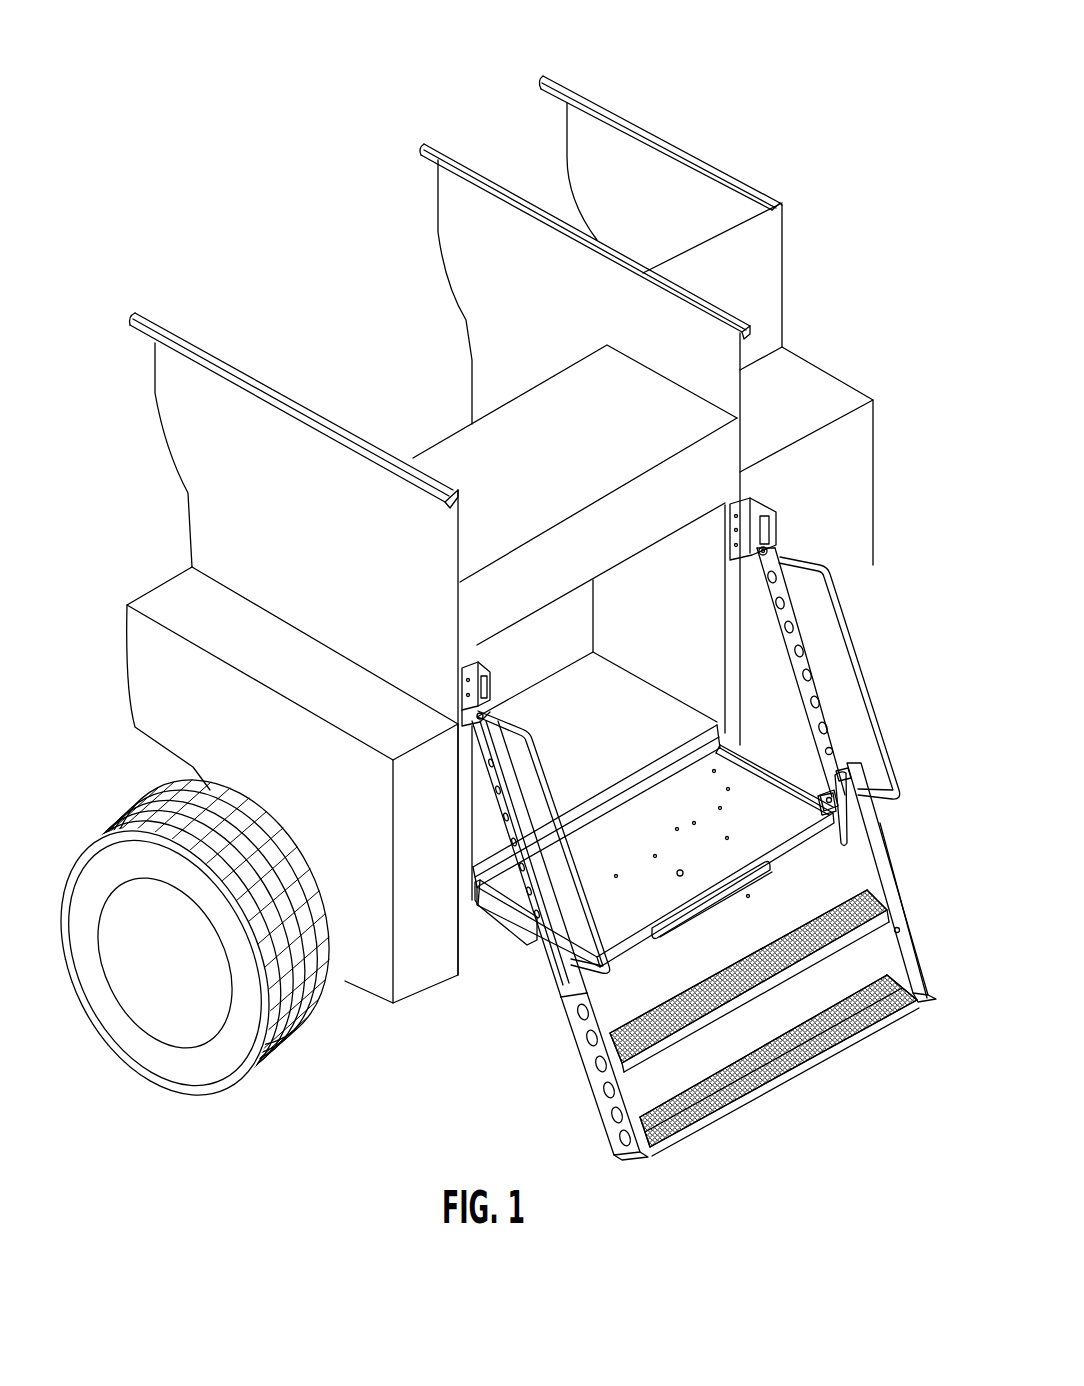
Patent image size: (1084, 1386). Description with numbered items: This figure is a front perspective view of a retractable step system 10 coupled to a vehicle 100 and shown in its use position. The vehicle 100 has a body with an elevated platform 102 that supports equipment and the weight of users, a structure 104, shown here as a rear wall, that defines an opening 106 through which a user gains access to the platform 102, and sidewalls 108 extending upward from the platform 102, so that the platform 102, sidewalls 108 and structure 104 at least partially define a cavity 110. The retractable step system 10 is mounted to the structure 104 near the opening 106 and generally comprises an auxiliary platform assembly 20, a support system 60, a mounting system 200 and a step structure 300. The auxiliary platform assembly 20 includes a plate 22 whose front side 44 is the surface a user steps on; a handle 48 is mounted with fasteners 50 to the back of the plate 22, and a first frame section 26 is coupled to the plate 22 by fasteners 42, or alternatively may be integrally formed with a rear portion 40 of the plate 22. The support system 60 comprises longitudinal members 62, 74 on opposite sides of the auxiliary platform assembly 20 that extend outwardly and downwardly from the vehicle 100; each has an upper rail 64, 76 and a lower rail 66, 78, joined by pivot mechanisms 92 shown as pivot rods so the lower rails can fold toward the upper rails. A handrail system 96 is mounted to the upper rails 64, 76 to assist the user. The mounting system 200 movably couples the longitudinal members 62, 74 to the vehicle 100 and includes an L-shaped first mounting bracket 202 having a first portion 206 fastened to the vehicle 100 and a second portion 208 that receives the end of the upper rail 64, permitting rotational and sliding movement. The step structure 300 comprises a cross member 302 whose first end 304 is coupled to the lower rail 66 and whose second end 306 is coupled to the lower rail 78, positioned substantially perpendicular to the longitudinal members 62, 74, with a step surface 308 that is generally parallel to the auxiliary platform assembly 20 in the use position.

The vehicle 100 is at (172, 520).
The cavity 110 is at (422, 424).
The sidewalls 108 is at (720, 376).
The structure 104 is at (597, 528).
The opening 106 is at (562, 636).
The platform 102 is at (561, 740).
The mounting system 200 is at (778, 494).
The first mounting bracket 202 is at (461, 672).
The first portion 206 is at (466, 660).
The second portion 208 is at (458, 708).
The retractable step system 10 is at (912, 764).
The upper rail 76 is at (784, 656).
The handrail system 96 is at (817, 560).
The pivot mechanisms 92 is at (846, 752).
The longitudinal member 74 is at (874, 752).
The rear portion 40 is at (734, 782).
The support system 60 is at (905, 848).
The plate 22 is at (697, 813).
The fasteners 42 is at (590, 866).
The front side 44 is at (782, 826).
The handle 48 is at (740, 912).
The fasteners 50 is at (710, 855).
The auxiliary platform assembly 20 is at (518, 970).
The first frame section 26 is at (500, 916).
The longitudinal member 62 is at (552, 1030).
The lower rail 66 is at (590, 1058).
The upper rail 64 is at (535, 838).
The lower rail 78 is at (892, 895).
The step structure 300 is at (782, 1104).
The cross member 302 is at (847, 1047).
The first end 304 is at (645, 1157).
The second end 306 is at (917, 1002).
The step surface 308 is at (722, 1075).